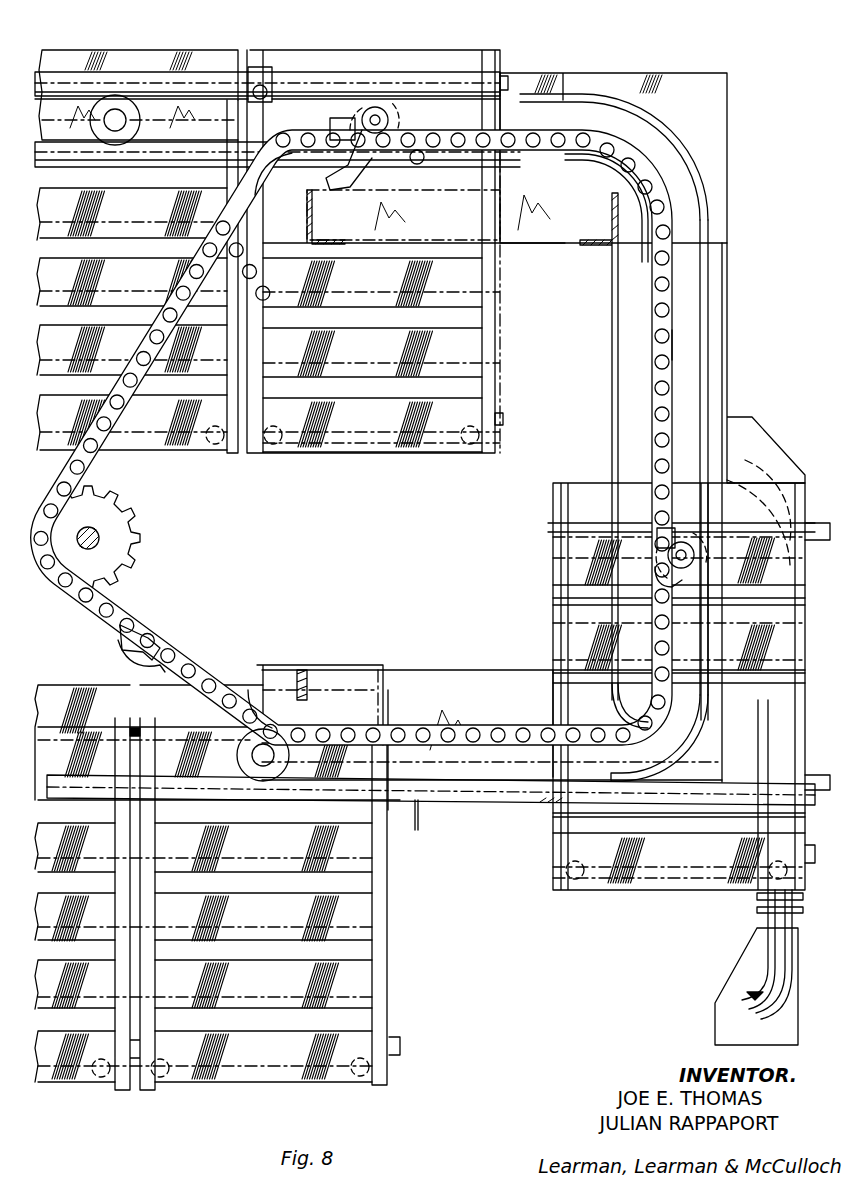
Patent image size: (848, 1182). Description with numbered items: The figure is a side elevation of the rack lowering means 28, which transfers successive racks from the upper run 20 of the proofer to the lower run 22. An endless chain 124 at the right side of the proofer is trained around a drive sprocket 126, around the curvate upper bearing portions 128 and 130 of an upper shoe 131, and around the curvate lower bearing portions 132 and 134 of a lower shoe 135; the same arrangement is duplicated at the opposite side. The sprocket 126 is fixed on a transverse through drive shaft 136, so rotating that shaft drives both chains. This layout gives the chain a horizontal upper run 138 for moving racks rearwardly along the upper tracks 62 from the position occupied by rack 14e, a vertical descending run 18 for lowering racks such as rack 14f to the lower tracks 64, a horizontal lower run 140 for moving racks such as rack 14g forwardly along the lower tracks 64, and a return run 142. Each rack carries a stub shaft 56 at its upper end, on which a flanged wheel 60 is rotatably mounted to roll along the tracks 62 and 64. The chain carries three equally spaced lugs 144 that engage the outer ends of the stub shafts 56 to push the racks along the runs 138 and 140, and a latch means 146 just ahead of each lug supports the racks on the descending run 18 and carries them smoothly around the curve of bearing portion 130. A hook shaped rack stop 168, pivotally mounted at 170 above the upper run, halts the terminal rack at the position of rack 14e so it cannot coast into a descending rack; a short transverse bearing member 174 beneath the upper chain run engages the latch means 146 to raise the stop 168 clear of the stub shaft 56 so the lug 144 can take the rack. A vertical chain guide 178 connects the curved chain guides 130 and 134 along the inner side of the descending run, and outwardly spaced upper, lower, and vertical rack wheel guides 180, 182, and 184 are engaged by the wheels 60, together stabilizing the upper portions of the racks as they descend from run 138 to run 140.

The rack 14e is at (378, 112).
The rack 14f is at (554, 532).
The rack 14g is at (388, 966).
The vertical descending run 18 is at (675, 384).
The upper run 20 is at (149, 32).
The lower run 22 is at (49, 678).
The lowering means 28 is at (672, 346).
The stub shaft 56 is at (123, 117).
The flanged wheel 60 is at (113, 108).
The upper tracks 62 is at (181, 146).
The lower tracks 64 is at (500, 803).
The endless chain 124 is at (670, 298).
The drive sprocket 126 is at (139, 530).
The curvate upper bearing portion 128 is at (268, 172).
The curvate upper bearing portion 130 is at (607, 165).
The shoe 131 is at (525, 250).
The curvate lower bearing portion 132 is at (266, 716).
The curvate lower bearing portion 134 is at (620, 720).
The shoe 135 is at (445, 672).
The drive shaft 136 is at (99, 530).
The horizontal upper run 138 is at (551, 127).
The horizontal lower run 140 is at (446, 775).
The return run 142 is at (204, 650).
The lug 144 is at (320, 122).
The latch means 146 is at (384, 135).
The rack stop 168 is at (358, 86).
The pivot 170 is at (260, 85).
The bearing member 174 is at (419, 165).
The vertical chain guide 178 is at (648, 358).
The upper rack wheel guide 180 is at (646, 124).
The lower rack wheel guide 182 is at (661, 772).
The vertical rack wheel guide 184 is at (708, 374).